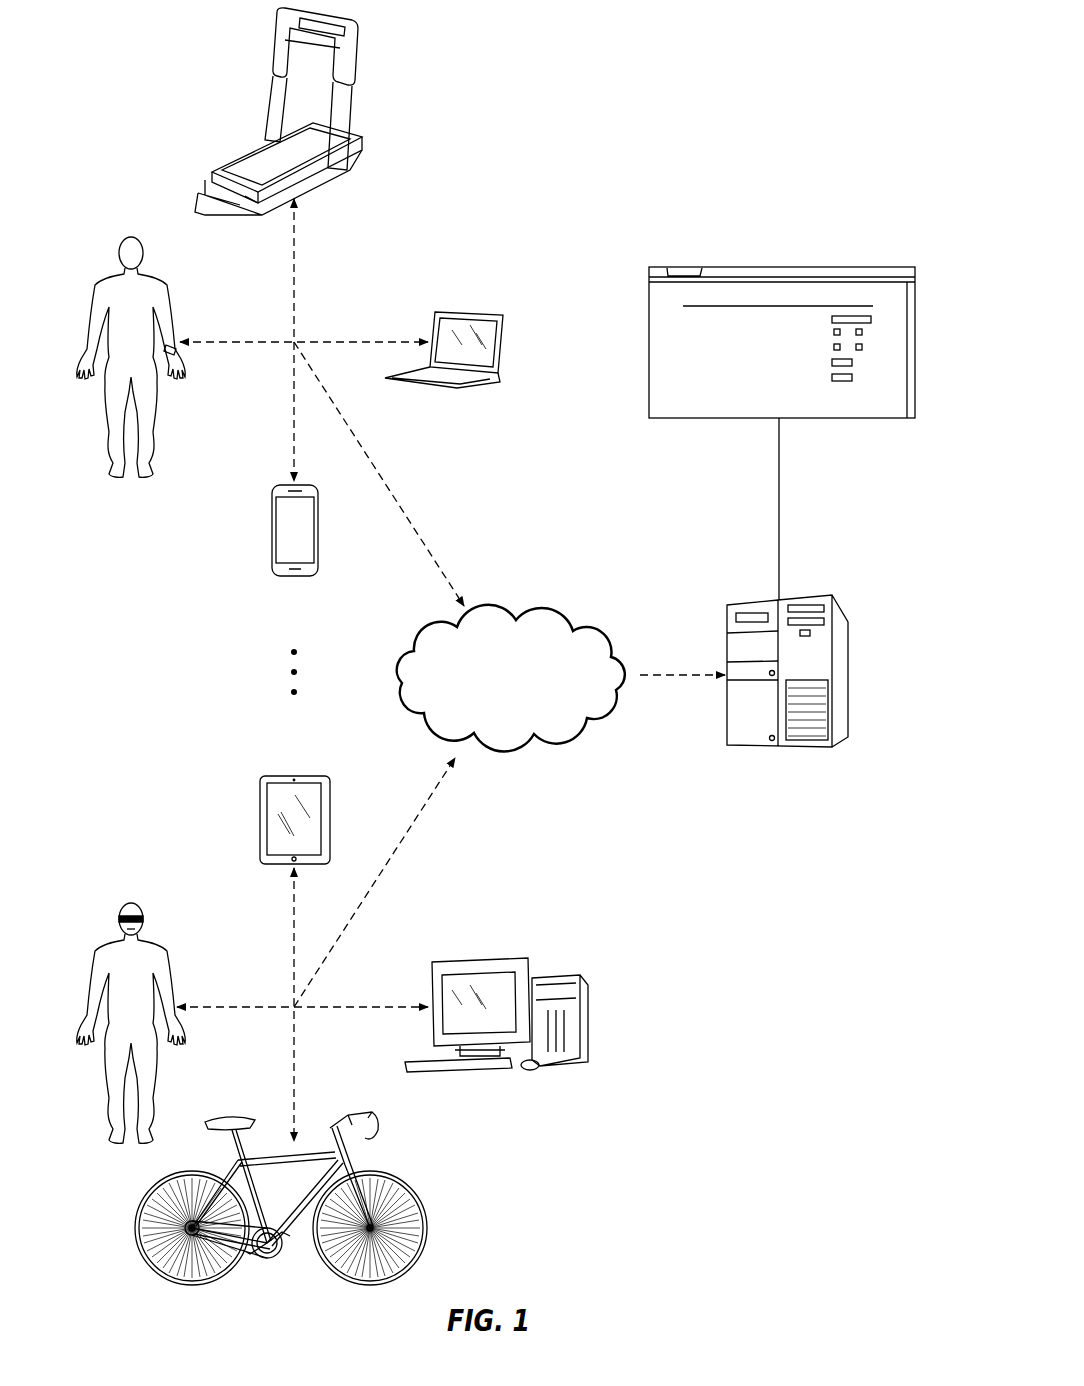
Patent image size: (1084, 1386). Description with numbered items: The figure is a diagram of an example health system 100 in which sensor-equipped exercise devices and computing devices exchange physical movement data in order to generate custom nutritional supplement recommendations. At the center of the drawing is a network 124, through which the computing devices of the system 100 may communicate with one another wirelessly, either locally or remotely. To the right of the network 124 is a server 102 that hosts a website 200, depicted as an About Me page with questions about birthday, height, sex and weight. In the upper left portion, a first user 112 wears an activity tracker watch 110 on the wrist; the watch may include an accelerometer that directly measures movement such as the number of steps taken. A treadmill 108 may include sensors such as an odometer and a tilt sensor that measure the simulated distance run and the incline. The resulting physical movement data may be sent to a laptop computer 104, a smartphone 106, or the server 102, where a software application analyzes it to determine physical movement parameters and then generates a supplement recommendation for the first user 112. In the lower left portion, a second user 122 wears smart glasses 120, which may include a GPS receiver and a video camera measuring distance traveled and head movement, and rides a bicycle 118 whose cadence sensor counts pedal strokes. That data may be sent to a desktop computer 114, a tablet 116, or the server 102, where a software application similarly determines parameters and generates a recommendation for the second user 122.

The health system 100 is at (842, 56).
The server 102 is at (850, 636).
The laptop computer 104 is at (484, 312).
The smartphone 106 is at (272, 508).
The treadmill 108 is at (356, 82).
The activity tracker watch 110 is at (175, 351).
The first user 112 is at (164, 284).
The desktop computer 114 is at (483, 960).
The tablet 116 is at (310, 776).
The bicycle 118 is at (420, 1184).
The smart glasses 120 is at (144, 918).
The second user 122 is at (164, 948).
The network 124 is at (492, 700).
The website 200 is at (851, 267).